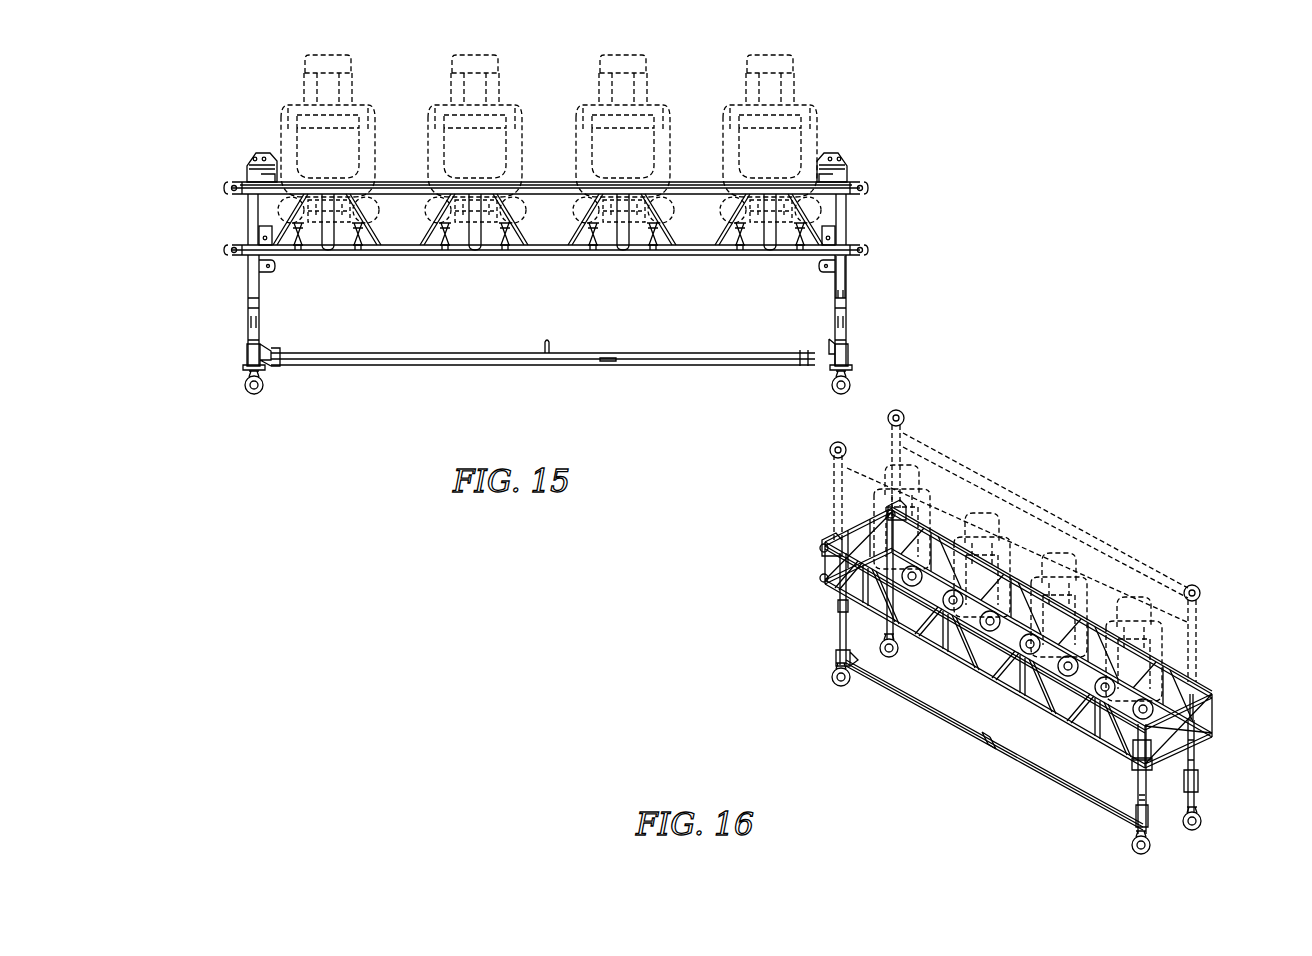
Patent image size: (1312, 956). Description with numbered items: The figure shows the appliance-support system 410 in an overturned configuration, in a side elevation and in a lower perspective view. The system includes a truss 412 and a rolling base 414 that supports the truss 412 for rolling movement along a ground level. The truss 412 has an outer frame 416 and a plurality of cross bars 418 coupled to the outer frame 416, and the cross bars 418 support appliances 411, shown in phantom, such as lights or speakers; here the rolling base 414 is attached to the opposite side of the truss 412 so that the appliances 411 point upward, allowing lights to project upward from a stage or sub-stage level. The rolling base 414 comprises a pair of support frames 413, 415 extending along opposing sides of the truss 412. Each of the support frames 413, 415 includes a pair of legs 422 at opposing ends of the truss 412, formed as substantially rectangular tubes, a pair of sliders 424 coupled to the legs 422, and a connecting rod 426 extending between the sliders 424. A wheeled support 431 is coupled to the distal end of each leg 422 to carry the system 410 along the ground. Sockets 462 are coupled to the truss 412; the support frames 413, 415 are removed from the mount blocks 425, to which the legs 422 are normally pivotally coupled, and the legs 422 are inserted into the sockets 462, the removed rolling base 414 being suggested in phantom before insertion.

In FIG. 15, the appliance-support system 410 is at (871, 131).
In FIG. 16, the appliance-support system 410 is at (1098, 465).
In FIG. 15, the appliances 411 is at (827, 108).
In FIG. 16, the appliances 411 is at (1081, 563).
In FIG. 15, the truss 412 is at (541, 179).
In FIG. 16, the truss 412 is at (1151, 652).
In FIG. 15, the support frame 413 is at (853, 348).
In FIG. 16, the support frame 413 is at (1201, 786).
In FIG. 15, the rolling base 414 is at (867, 268).
In FIG. 16, the rolling base 414 is at (1178, 580).
In FIG. 15, the support frame 415 is at (858, 300).
In FIG. 16, the support frame 415 is at (1161, 835).
In FIG. 15, the outer frame 416 is at (684, 180).
In FIG. 16, the outer frame 416 is at (1200, 660).
In FIG. 15, the cross bars 418 is at (697, 246).
In FIG. 16, the cross bars 418 is at (1016, 668).
In FIG. 15, the legs 422 is at (245, 280).
In FIG. 16, the legs 422 is at (837, 605).
In FIG. 15, the sliders 424 is at (244, 352).
In FIG. 16, the sliders 424 is at (831, 660).
In FIG. 15, the mount block 425 is at (268, 150).
In FIG. 16, the mount block 425 is at (824, 518).
In FIG. 15, the connecting rod 426 is at (513, 371).
In FIG. 16, the connecting rod 426 is at (976, 745).
In FIG. 15, the wheeled support 431 is at (254, 398).
In FIG. 16, the wheeled support 431 is at (840, 680).
In FIG. 15, the sockets 462 is at (263, 230).
In FIG. 16, the sockets 462 is at (1129, 760).